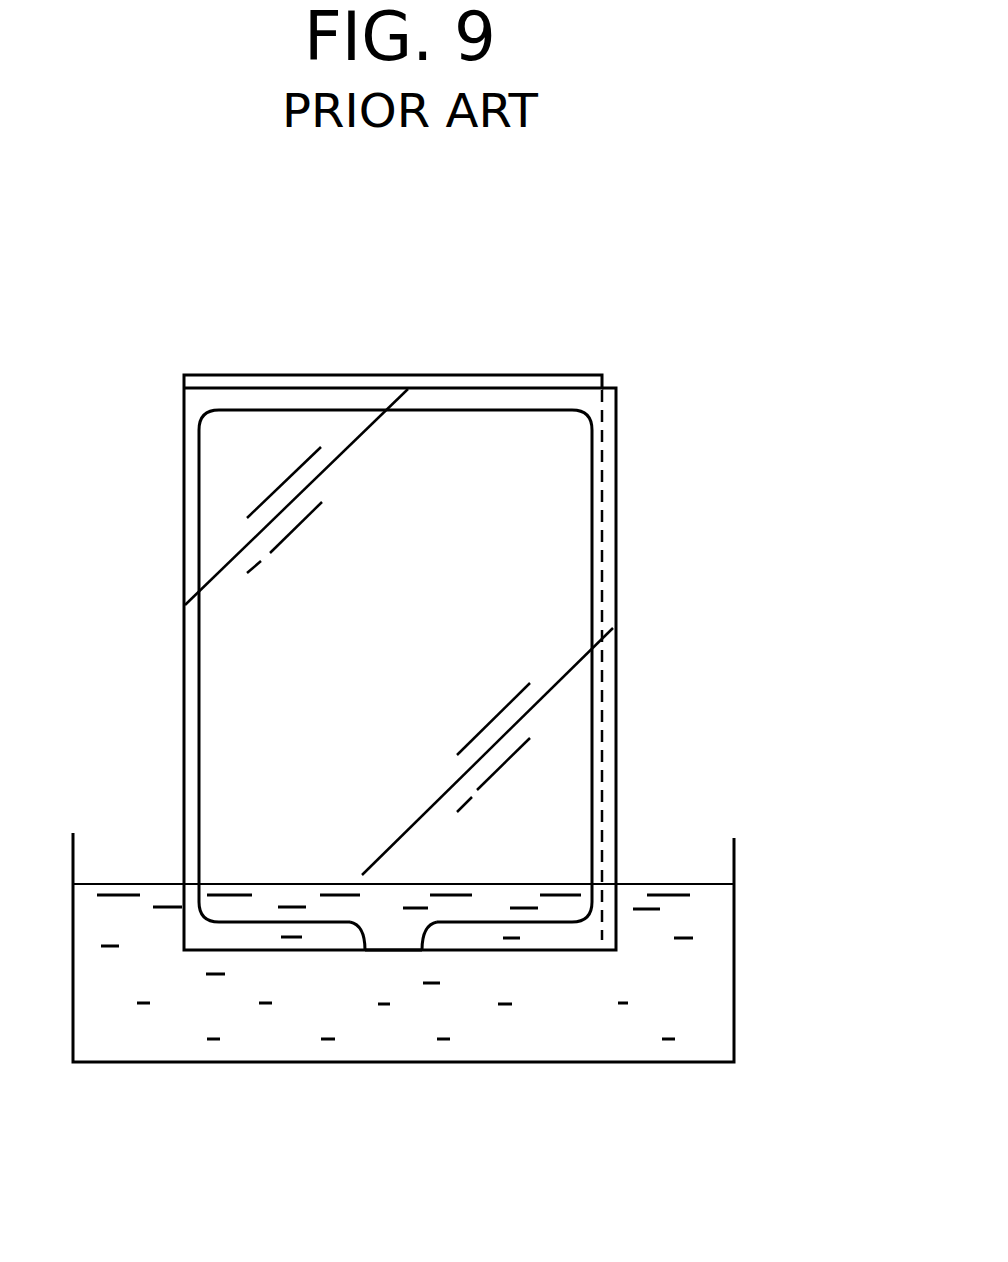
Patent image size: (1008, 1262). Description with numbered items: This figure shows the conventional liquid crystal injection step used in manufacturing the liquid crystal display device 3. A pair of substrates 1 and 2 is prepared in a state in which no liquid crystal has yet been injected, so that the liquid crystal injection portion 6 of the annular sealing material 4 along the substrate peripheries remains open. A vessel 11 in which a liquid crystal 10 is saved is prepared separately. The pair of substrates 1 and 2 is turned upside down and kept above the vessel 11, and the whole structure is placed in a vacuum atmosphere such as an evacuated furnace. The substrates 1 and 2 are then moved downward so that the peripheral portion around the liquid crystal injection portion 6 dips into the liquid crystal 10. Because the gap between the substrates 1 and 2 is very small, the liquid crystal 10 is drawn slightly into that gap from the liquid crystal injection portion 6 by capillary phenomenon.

The substrate 1 is at (616, 660).
The substrate 2 is at (462, 375).
The liquid crystal display device 3 is at (668, 420).
The sealing material 4 is at (199, 660).
The liquid crystal injection portion 6 is at (398, 940).
The liquid crystal 10 is at (678, 1001).
The vessel 11 is at (735, 868).